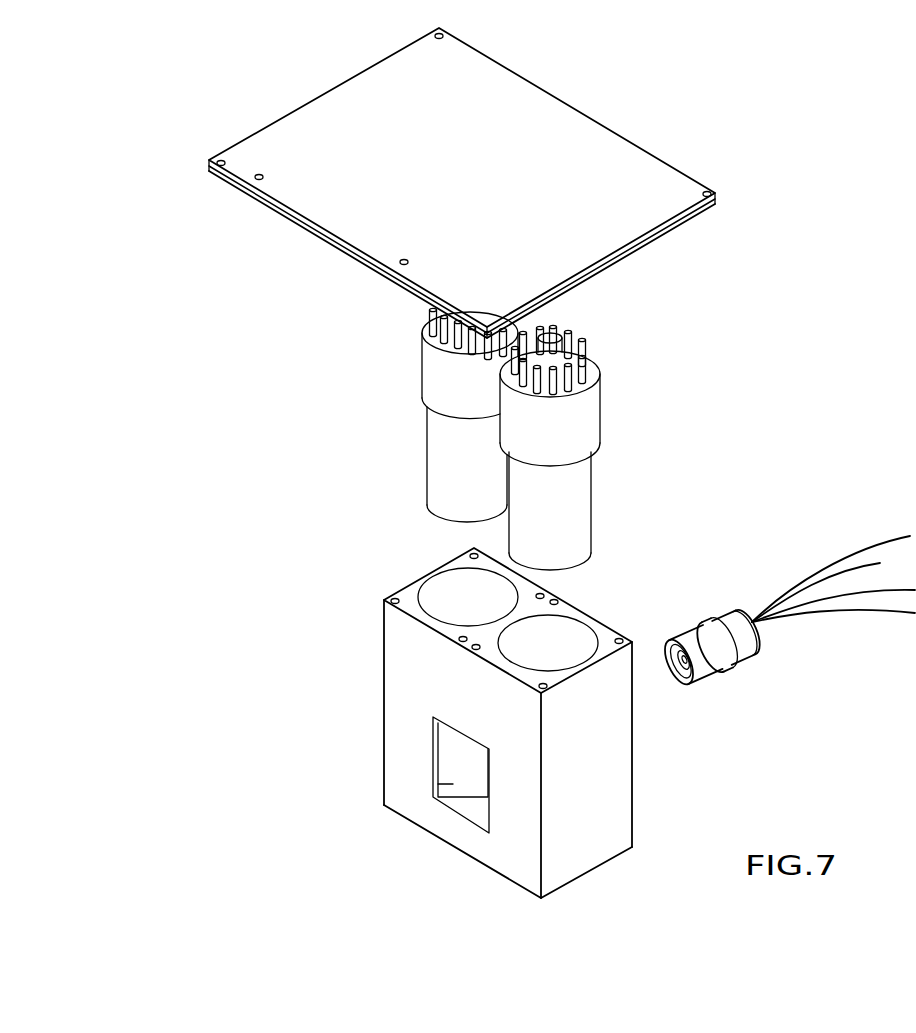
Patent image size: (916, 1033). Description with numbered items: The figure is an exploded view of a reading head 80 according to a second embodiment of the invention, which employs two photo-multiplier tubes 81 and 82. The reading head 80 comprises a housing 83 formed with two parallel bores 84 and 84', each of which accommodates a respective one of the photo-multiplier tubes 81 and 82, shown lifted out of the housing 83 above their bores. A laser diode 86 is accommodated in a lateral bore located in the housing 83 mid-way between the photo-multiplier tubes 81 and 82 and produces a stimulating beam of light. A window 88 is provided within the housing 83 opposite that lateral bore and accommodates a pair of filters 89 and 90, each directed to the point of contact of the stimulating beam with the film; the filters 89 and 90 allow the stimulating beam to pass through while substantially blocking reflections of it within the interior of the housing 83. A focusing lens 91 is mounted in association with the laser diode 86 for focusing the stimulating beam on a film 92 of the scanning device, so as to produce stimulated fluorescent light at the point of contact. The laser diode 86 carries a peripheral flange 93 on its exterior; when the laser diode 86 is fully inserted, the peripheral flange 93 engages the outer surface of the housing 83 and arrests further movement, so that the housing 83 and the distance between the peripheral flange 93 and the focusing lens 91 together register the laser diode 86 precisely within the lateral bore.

The reading head 80 is at (330, 773).
The photo-multiplier tube 81 is at (440, 437).
The photo-multiplier tube 82 is at (573, 475).
The housing 83 is at (583, 807).
The parallel bore 84 is at (416, 548).
The parallel bore 84' is at (599, 588).
The laser diode 86 is at (728, 652).
The window 88 is at (453, 784).
The filter 89 is at (457, 757).
The filter 90 is at (488, 782).
The focusing lens 91 is at (675, 678).
The film 92 is at (605, 220).
The peripheral flange 93 is at (757, 635).